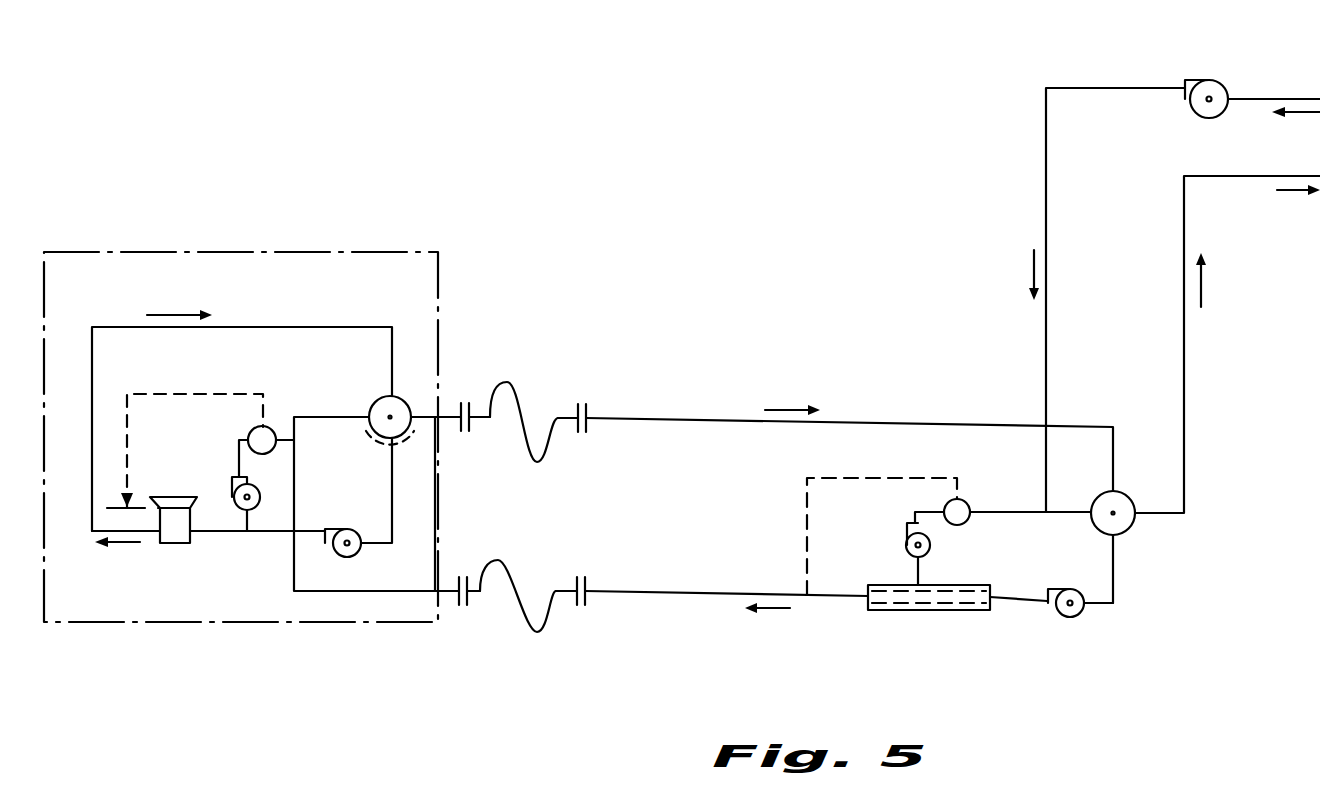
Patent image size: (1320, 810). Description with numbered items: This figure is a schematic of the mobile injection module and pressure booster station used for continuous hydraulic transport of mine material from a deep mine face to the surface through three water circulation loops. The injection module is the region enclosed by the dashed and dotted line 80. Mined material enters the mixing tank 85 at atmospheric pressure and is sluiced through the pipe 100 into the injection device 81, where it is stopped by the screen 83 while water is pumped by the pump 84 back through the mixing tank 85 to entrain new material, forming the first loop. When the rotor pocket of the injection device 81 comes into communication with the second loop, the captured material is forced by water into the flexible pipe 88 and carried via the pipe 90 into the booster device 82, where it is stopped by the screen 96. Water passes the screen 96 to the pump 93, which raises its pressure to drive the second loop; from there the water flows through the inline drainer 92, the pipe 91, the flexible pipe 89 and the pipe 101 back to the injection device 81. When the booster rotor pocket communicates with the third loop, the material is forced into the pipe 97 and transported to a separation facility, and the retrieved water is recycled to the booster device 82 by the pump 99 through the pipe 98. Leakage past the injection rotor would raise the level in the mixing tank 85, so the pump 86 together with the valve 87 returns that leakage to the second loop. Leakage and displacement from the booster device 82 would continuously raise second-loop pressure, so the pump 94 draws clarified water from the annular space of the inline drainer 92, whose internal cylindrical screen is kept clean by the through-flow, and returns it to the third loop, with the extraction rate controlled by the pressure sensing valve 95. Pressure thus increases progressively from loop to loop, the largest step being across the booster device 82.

The dashed and dotted line 80 is at (298, 252).
The injection device 81 is at (390, 417).
The booster device 82 is at (1150, 478).
The screen 83 is at (407, 437).
The pump 84 is at (350, 557).
The mixing tank 85 is at (177, 531).
The pump 86 is at (240, 510).
The valve 87 is at (270, 429).
The flexible pipe 88 is at (525, 417).
The flexible pipe 89 is at (582, 633).
The pipe 90 is at (907, 390).
The pipe 91 is at (807, 598).
The inline drainer 92 is at (953, 605).
The pump 93 is at (1077, 618).
The pump 94 is at (933, 550).
The pressure sensing valve 95 is at (965, 505).
The screen 96 is at (1120, 520).
The pipe 97 is at (1186, 320).
The pipe 98 is at (1046, 165).
The pump 99 is at (1209, 99).
The pipe 100 is at (93, 358).
The pipe 101 is at (370, 591).